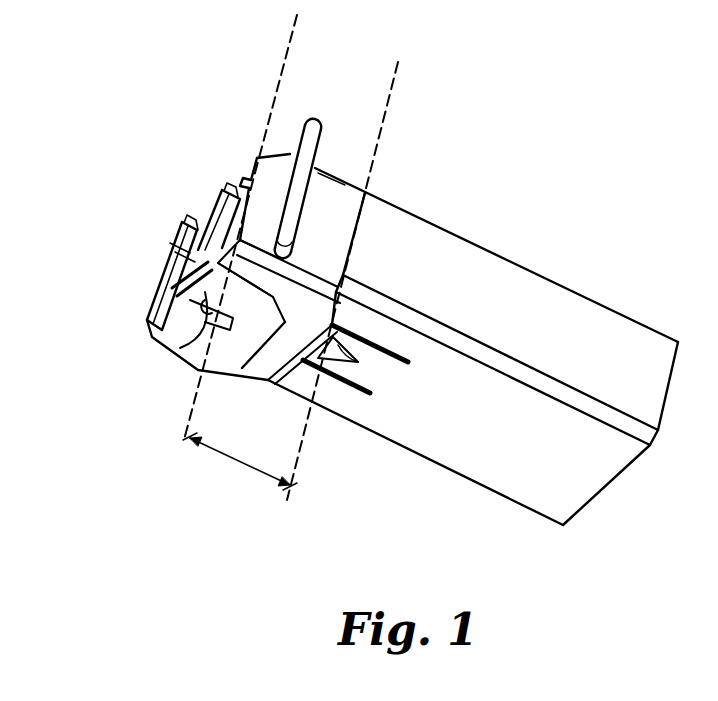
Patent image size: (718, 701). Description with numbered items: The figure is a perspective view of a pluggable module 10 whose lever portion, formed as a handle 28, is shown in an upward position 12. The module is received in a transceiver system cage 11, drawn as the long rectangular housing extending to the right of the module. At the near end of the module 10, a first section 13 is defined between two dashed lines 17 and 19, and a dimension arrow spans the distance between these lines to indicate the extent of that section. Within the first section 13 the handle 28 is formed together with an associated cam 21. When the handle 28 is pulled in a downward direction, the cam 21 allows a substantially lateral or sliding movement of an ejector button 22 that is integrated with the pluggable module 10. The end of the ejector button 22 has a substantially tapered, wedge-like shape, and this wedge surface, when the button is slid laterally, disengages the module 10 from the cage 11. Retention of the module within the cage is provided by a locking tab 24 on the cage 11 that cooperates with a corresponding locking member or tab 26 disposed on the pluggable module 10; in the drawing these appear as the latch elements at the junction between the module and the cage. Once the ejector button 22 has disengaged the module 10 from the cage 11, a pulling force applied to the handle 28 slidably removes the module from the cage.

The pluggable module 10 is at (333, 172).
The transceiver system cage 11 is at (560, 288).
The upward position 12 is at (247, 147).
The first section 13 is at (240, 462).
The dashed line 17 is at (195, 412).
The dashed line 19 is at (303, 446).
The cam 21 is at (177, 354).
The ejector button 22 is at (252, 347).
The locking tab 24 is at (358, 337).
The locking member 26 is at (350, 363).
The handle 28 is at (320, 118).